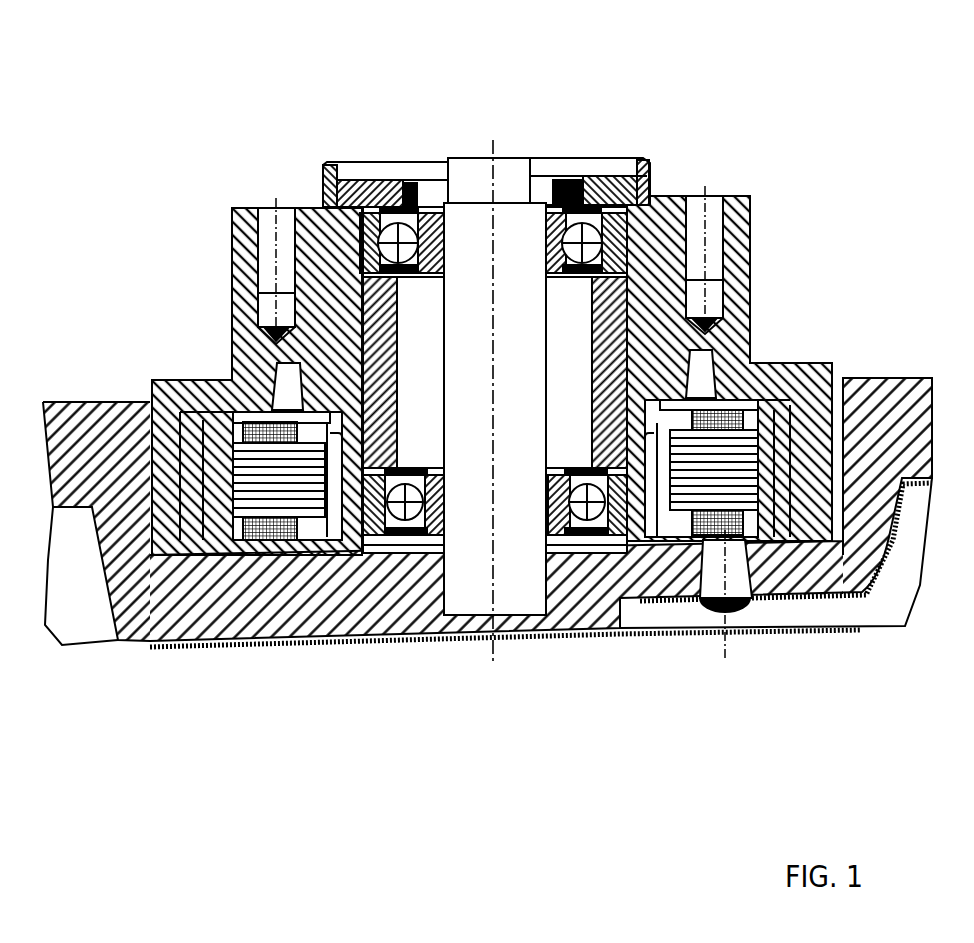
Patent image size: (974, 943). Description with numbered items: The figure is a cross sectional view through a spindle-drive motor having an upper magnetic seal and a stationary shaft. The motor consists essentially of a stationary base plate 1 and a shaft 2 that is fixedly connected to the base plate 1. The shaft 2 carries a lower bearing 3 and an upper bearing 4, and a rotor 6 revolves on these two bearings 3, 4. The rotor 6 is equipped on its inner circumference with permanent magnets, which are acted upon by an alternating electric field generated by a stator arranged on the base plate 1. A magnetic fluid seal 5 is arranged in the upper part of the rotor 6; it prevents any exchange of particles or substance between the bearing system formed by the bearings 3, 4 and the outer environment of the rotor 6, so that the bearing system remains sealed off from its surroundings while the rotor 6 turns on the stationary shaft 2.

The base plate 1 is at (372, 568).
The shaft 2 is at (515, 562).
The lower bearing 3 is at (620, 522).
The upper bearing 4 is at (580, 185).
The magnetic fluid seal 5 is at (411, 140).
The rotor 6 is at (663, 243).